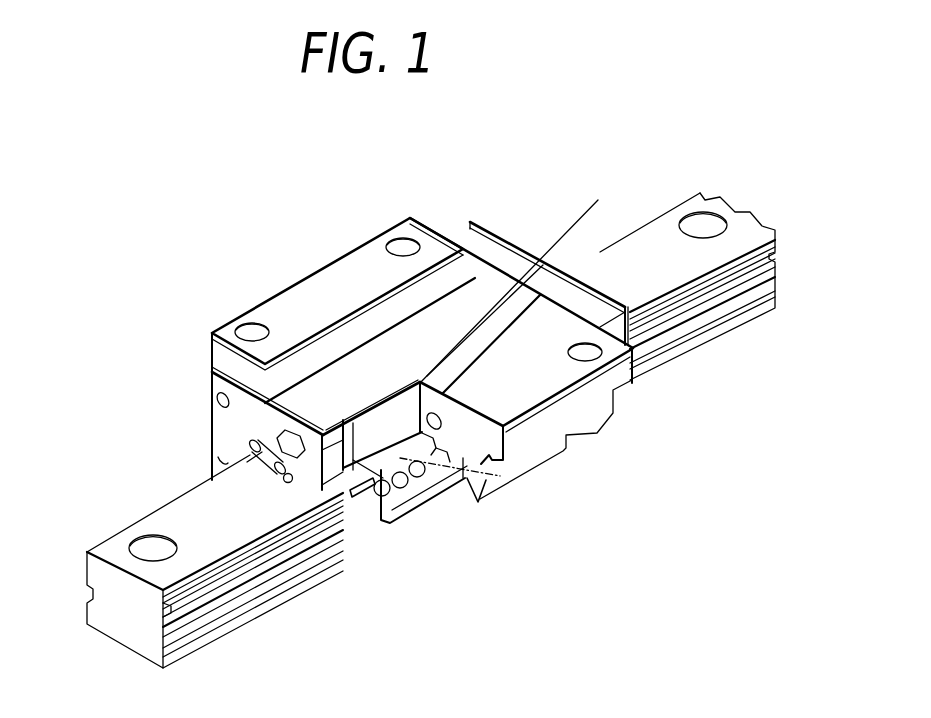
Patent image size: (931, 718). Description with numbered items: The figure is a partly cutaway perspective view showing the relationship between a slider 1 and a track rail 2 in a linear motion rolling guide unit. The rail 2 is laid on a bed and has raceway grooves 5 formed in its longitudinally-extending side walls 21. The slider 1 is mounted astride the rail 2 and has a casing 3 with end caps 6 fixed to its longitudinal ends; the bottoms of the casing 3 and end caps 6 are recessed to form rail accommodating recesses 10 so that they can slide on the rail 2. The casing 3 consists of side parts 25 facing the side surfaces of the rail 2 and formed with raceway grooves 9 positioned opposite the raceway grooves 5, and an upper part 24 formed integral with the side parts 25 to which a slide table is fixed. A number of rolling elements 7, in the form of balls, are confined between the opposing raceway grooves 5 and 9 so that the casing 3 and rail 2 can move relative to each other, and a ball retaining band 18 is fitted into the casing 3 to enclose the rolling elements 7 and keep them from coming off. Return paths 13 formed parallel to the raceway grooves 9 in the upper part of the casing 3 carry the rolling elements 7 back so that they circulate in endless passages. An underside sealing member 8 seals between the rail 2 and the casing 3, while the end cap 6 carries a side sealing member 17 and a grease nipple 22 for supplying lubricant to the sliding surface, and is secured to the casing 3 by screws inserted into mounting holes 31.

The slider 1 is at (424, 216).
The track rail 2 is at (195, 560).
The casing 3 is at (318, 285).
The raceway grooves 5 is at (92, 563).
The end caps 6 is at (513, 257).
The rolling elements 7 is at (402, 494).
The underside sealing member 8 is at (437, 502).
The raceway grooves 9 is at (455, 503).
The rail accommodating recesses 10 is at (460, 468).
The return paths 13 is at (445, 427).
The side sealing member 17 is at (332, 483).
The ball retaining band 18 is at (372, 485).
The side walls 21 is at (258, 553).
The grease nipple 22 is at (262, 443).
The upper part 24 is at (517, 277).
The side parts 25 is at (478, 502).
The mounting holes 31 is at (215, 397).